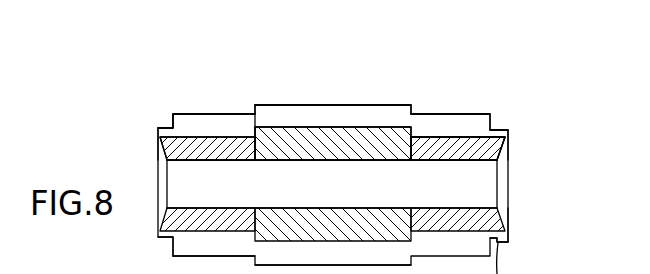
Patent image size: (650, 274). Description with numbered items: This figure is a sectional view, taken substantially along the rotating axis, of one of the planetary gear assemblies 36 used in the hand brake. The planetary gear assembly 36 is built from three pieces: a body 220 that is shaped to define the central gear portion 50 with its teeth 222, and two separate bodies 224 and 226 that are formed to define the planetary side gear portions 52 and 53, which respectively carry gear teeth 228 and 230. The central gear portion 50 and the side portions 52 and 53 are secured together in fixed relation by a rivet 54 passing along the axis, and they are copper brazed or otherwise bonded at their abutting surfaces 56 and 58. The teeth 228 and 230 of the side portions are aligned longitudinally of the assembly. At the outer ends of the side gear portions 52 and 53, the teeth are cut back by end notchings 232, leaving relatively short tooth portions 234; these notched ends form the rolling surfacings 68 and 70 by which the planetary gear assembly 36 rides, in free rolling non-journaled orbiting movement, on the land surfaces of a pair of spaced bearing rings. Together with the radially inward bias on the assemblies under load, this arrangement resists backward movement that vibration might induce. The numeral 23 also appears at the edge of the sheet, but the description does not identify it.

The side portion 52 is at (202, 133).
The gear teeth 228 is at (224, 123).
The body 224 is at (238, 136).
The brazed abutting surface 56 is at (251, 137).
The body 220 is at (307, 147).
The central gear portion 50 is at (347, 137).
The teeth 222 is at (383, 113).
The brazed abutting surface 58 is at (427, 133).
The planetary gear assembly 36 is at (459, 89).
The gear teeth 230 is at (465, 148).
The body 226 is at (470, 150).
The side portion 53 is at (506, 138).
The rivet 54 is at (483, 188).
The short tooth portion 234 is at (158, 138).
The rolling surfacing 70 is at (507, 246).
The rolling surfacing 68 is at (153, 133).
The end notching 232 is at (158, 238).
The roller 23 is at (635, 166).